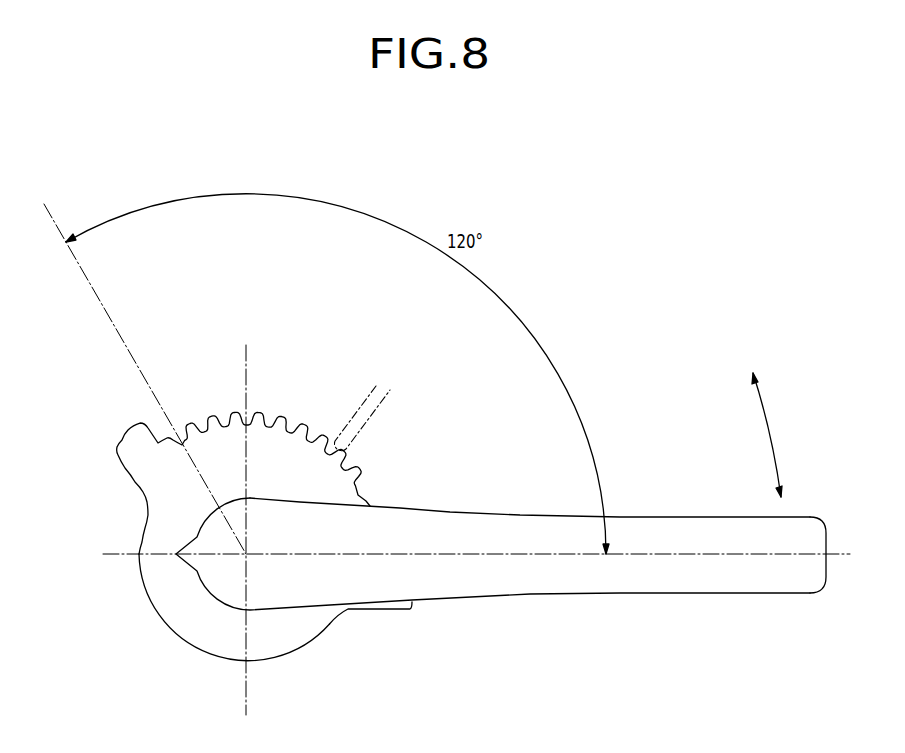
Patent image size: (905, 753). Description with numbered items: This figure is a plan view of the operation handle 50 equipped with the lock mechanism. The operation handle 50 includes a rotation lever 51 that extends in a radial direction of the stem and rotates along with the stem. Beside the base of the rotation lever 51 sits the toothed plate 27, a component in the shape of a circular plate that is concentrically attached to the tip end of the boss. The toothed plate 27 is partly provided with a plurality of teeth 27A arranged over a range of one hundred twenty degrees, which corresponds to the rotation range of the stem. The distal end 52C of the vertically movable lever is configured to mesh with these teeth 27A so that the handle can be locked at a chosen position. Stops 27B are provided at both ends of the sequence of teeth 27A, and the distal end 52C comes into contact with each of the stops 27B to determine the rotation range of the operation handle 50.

The toothed plate 27 is at (262, 536).
The teeth 27A is at (368, 491).
The stops 27B is at (133, 440).
The operation handle 50 is at (533, 491).
The rotation lever 51 is at (817, 536).
The distal end 52C is at (375, 401).